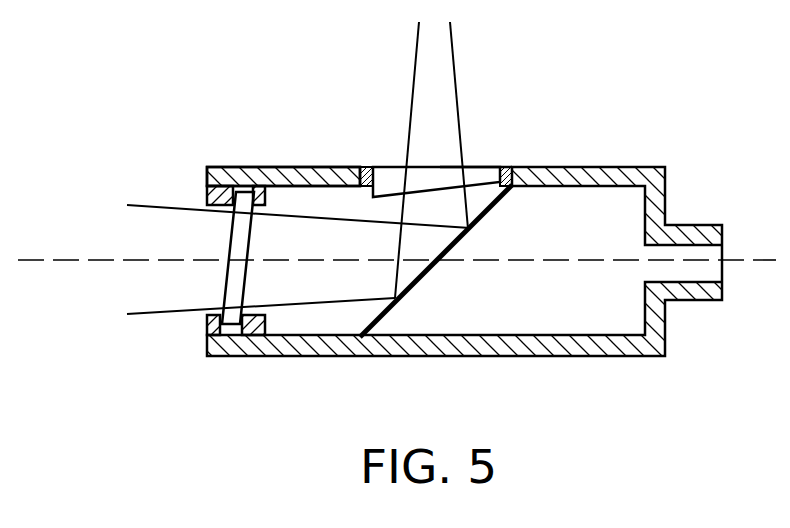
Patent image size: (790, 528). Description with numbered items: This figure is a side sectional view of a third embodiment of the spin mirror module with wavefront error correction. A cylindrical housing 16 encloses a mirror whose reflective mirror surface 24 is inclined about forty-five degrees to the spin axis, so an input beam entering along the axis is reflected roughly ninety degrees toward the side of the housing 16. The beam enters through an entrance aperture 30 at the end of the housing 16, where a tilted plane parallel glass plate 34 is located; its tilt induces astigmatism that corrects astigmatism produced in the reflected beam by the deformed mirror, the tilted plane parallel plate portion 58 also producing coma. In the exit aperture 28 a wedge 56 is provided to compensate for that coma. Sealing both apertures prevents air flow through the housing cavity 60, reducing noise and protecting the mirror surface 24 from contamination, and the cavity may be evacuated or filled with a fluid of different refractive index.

The housing 16 is at (643, 167).
The mirror surface 24 is at (372, 316).
The exit aperture 28 is at (385, 168).
The entrance aperture 30 is at (226, 219).
The plane parallel glass plate 34 is at (233, 282).
The wedge 56 is at (483, 165).
The plane parallel plate portion 58 is at (228, 240).
The housing cavity 60 is at (342, 197).